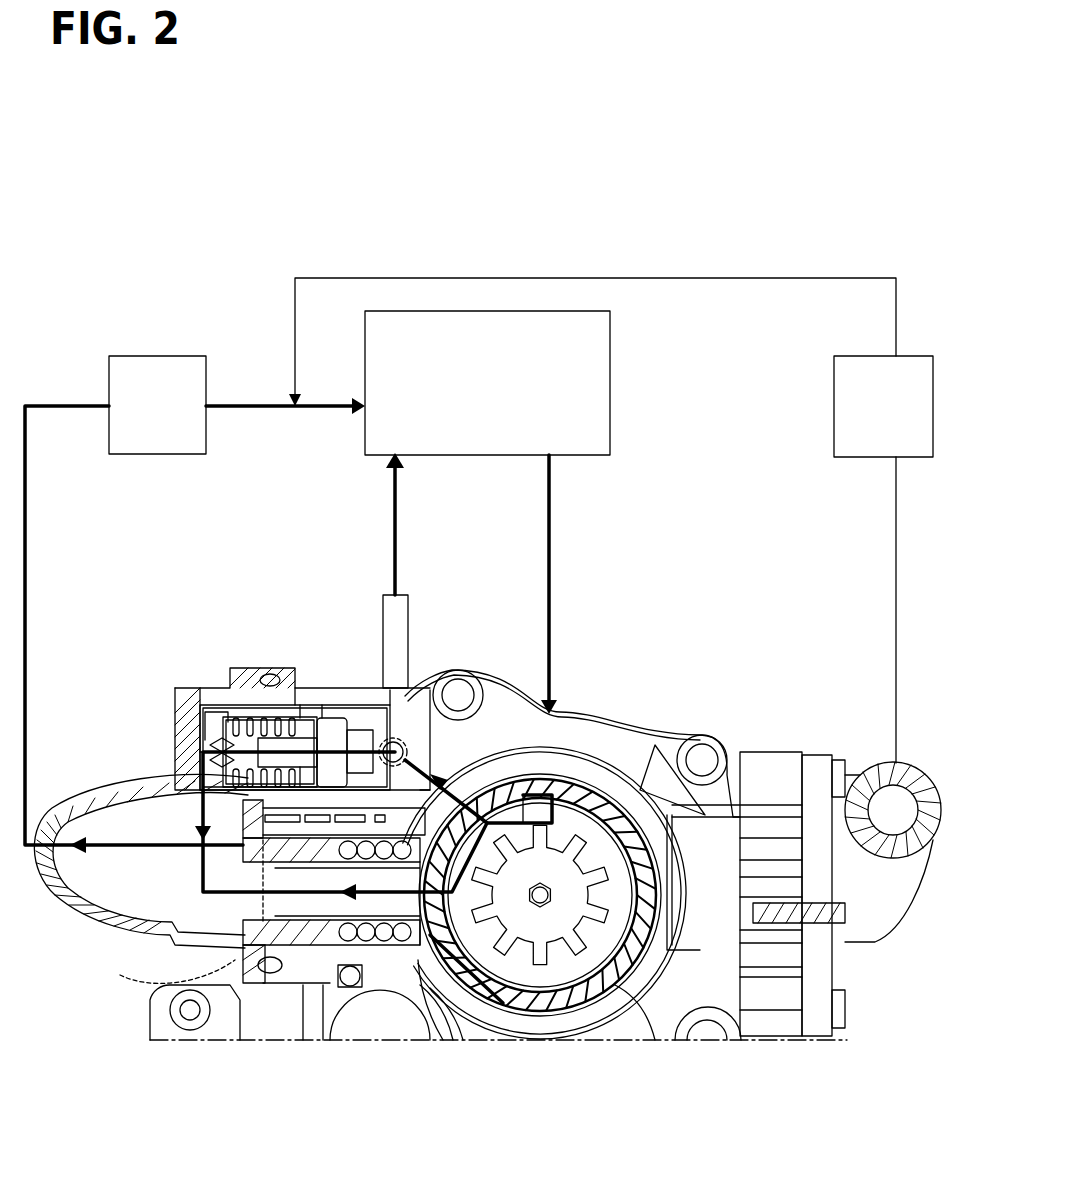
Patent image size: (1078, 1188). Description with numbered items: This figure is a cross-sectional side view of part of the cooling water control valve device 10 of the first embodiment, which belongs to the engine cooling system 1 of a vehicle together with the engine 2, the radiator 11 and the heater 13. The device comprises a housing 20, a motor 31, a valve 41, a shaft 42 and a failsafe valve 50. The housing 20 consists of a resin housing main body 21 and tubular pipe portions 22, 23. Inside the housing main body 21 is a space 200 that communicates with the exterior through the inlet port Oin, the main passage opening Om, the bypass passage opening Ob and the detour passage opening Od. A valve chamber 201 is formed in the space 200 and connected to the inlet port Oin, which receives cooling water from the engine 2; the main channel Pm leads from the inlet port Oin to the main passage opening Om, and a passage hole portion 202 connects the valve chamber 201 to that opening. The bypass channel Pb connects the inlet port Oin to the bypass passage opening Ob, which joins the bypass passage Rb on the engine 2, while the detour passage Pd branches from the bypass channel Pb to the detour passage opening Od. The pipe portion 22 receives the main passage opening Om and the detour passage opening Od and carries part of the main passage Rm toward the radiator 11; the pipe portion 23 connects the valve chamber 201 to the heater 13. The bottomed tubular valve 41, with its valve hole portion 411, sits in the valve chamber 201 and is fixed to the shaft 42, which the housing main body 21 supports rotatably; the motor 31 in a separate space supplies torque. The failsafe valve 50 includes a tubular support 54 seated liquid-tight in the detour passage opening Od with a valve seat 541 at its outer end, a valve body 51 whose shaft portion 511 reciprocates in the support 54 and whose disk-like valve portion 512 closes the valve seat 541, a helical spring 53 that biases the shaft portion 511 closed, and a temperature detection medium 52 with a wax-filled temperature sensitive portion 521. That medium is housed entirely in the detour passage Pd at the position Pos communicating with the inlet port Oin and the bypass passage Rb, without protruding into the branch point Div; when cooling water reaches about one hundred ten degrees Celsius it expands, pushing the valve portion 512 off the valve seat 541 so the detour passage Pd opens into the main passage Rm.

The engine cooling system 1 is at (524, 230).
The engine 2 is at (606, 378).
The cooling water control valve device 10 is at (664, 630).
The radiator 11 is at (166, 362).
The heater 13 is at (834, 408).
The housing 20 is at (718, 710).
The housing main body 21 is at (772, 752).
The pipe portion 22 is at (93, 895).
The pipe portion 23 is at (896, 895).
The motor 31 is at (383, 992).
The valve 41 is at (505, 1000).
The shaft 42 is at (540, 907).
The failsafe valve 50 is at (188, 748).
The valve body 51 is at (240, 690).
The temperature detection medium 52 is at (330, 735).
The spring 53 is at (232, 700).
The support 54 is at (252, 710).
The space 200 is at (583, 827).
The valve chamber 201 is at (620, 840).
The passage hole portion 202 is at (417, 900).
The valve hole portion 411 is at (442, 1000).
The shaft portion 511 is at (290, 745).
The valve portion 512 is at (222, 738).
The temperature sensitive portion 521 is at (358, 750).
The valve seat 541 is at (200, 712).
The main passage Rm is at (26, 580).
The bypass passage Rb is at (396, 526).
The branch point Div is at (382, 735).
The bypass passage opening Ob is at (402, 745).
The bypass channel Pb is at (471, 905).
The inlet port Oin is at (523, 810).
The position Pos is at (323, 702).
The detour passage Pd is at (300, 720).
The detour passage opening Od is at (230, 790).
The main passage opening Om is at (171, 974).
The main channel Pm is at (302, 893).